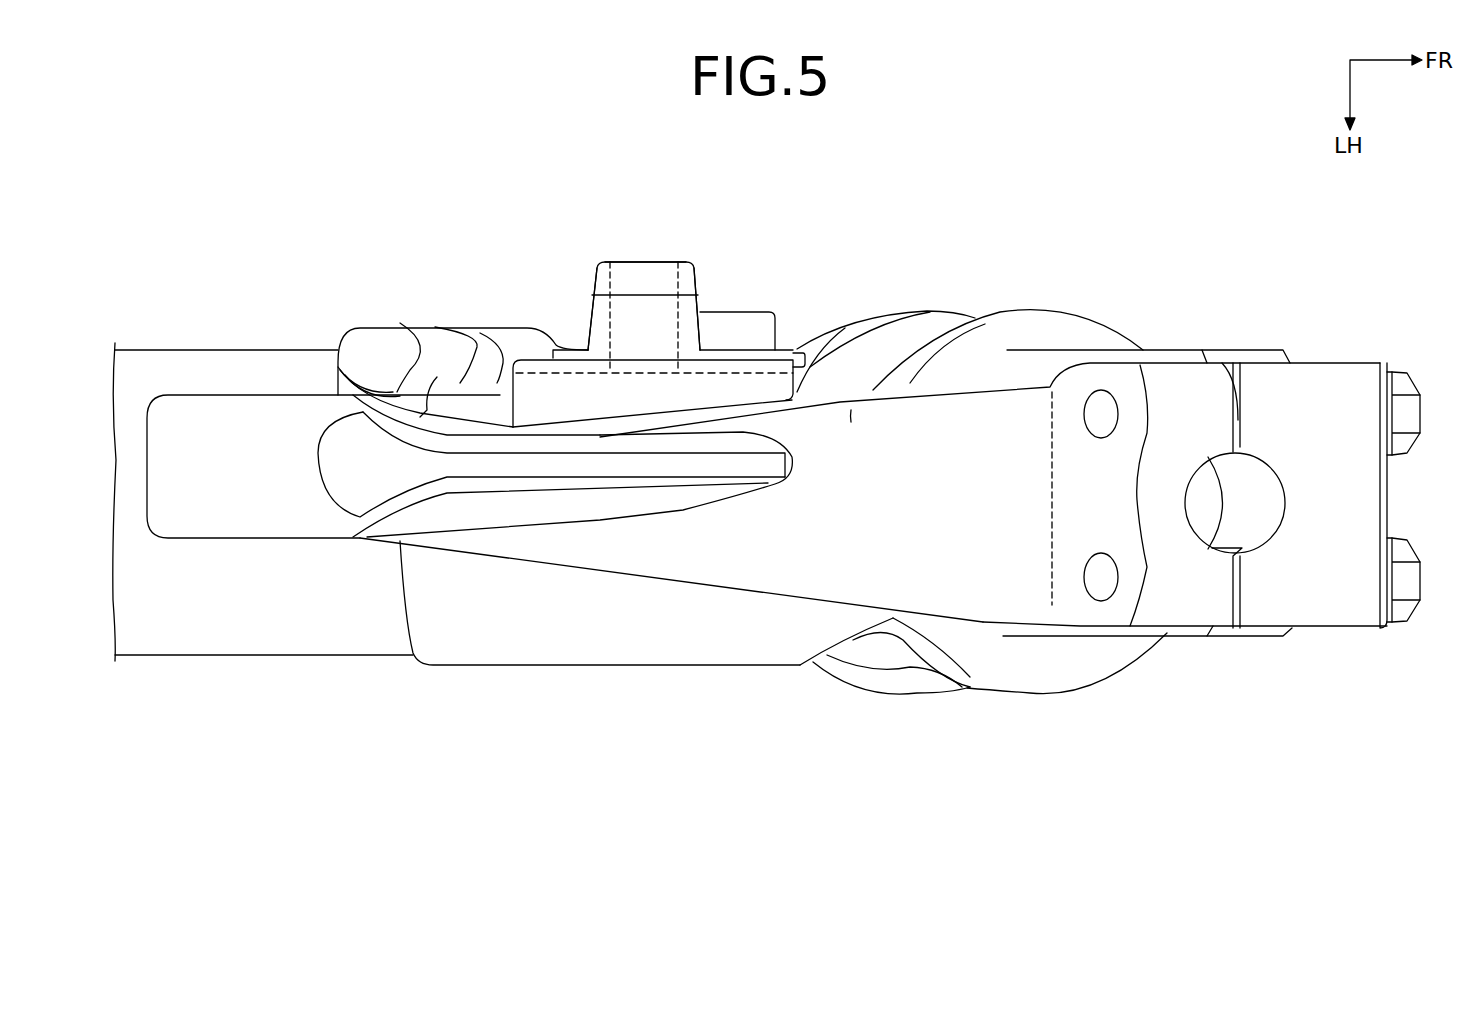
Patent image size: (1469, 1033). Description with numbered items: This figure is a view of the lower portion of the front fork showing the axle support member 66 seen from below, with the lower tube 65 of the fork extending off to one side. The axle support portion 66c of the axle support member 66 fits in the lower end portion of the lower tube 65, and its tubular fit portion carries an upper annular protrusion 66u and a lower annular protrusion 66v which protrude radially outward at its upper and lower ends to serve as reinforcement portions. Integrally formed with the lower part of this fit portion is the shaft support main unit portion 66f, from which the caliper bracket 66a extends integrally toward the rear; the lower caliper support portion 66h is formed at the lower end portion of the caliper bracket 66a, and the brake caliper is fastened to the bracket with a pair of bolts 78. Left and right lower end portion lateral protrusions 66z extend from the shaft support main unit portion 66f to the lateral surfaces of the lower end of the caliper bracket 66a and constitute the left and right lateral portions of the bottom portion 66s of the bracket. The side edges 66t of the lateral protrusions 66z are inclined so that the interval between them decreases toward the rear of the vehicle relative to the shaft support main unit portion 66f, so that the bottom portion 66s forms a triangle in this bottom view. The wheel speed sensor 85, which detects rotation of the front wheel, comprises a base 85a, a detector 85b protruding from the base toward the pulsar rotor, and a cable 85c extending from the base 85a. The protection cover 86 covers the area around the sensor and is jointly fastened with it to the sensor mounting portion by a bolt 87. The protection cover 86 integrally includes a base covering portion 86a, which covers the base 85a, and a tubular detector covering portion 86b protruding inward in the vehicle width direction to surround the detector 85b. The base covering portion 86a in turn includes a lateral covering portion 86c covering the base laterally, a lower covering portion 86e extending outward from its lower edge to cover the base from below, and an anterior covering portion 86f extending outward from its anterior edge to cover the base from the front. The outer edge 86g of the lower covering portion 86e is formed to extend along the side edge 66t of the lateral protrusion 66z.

The lower tube 65 is at (218, 367).
The axle support member 66 is at (943, 310).
The caliper bracket 66a is at (553, 562).
The axle support portion 66c is at (1053, 310).
The shaft support main unit portion 66f is at (1169, 356).
The lower caliper support portion 66h is at (217, 518).
The bottom portion 66s is at (880, 515).
The side edges 66t is at (812, 392).
The upper annular protrusion 66u is at (920, 310).
The lower annular protrusion 66v is at (1085, 311).
The lower end portion lateral protrusions 66z is at (851, 413).
The bolts 78 is at (1398, 383).
The wheel speed sensor 85 is at (540, 369).
The base 85a is at (571, 363).
The detector 85b is at (597, 268).
The cable 85c is at (440, 375).
The protection cover 86 is at (702, 290).
The base covering portion 86a is at (590, 423).
The detector covering portion 86b is at (640, 260).
The lateral covering portion 86c is at (653, 368).
The lower covering portion 86e is at (658, 390).
The anterior covering portion 86f is at (793, 357).
The outer edge 86g is at (610, 415).
The bolt 87 is at (748, 323).